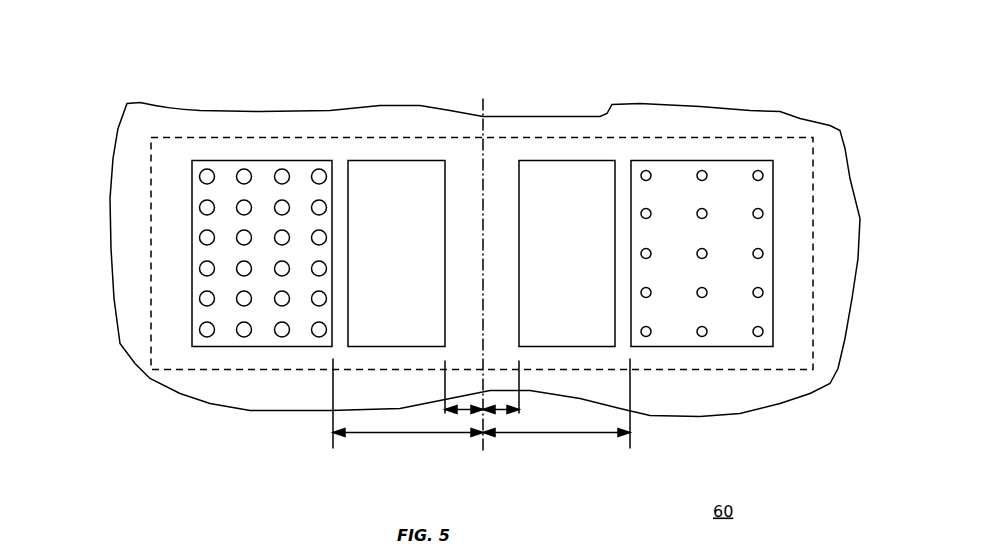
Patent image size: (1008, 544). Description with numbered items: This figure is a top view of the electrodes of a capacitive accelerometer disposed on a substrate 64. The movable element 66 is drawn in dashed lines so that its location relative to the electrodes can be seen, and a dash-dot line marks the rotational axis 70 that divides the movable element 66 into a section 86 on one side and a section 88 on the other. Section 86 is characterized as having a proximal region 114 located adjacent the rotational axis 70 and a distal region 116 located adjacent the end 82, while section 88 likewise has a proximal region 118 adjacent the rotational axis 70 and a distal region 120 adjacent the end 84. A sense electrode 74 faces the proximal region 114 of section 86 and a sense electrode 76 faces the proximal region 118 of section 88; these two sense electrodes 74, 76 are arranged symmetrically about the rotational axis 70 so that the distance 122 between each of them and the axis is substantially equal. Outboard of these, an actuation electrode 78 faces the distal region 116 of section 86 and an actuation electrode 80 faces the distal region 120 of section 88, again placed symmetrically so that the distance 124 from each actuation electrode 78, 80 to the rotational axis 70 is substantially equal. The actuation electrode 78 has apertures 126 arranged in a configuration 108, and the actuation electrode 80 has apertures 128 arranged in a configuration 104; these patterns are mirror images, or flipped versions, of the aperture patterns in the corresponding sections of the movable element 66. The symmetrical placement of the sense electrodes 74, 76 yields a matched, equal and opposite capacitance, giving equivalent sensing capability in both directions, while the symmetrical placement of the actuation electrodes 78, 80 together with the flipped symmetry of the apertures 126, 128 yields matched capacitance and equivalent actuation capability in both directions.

The substrate 64 is at (127, 168).
The movable element 66 is at (200, 140).
The rotational axis 70 is at (486, 110).
The sense electrode 74 is at (418, 343).
The sense electrode 76 is at (548, 343).
The actuation electrode 78 is at (265, 343).
The actuation electrode 80 is at (672, 343).
The end 82 is at (150, 297).
The end 84 is at (812, 277).
The section 86 is at (362, 140).
The section 88 is at (605, 140).
The configuration 104 is at (774, 318).
The configuration 108 is at (184, 322).
The proximal region 114 is at (403, 136).
The distal region 116 is at (261, 138).
The proximal region 118 is at (542, 136).
The distal region 120 is at (732, 136).
The distance 122 is at (467, 413).
The distance 124 is at (380, 437).
The apertures 126 is at (205, 237).
The apertures 128 is at (760, 178).